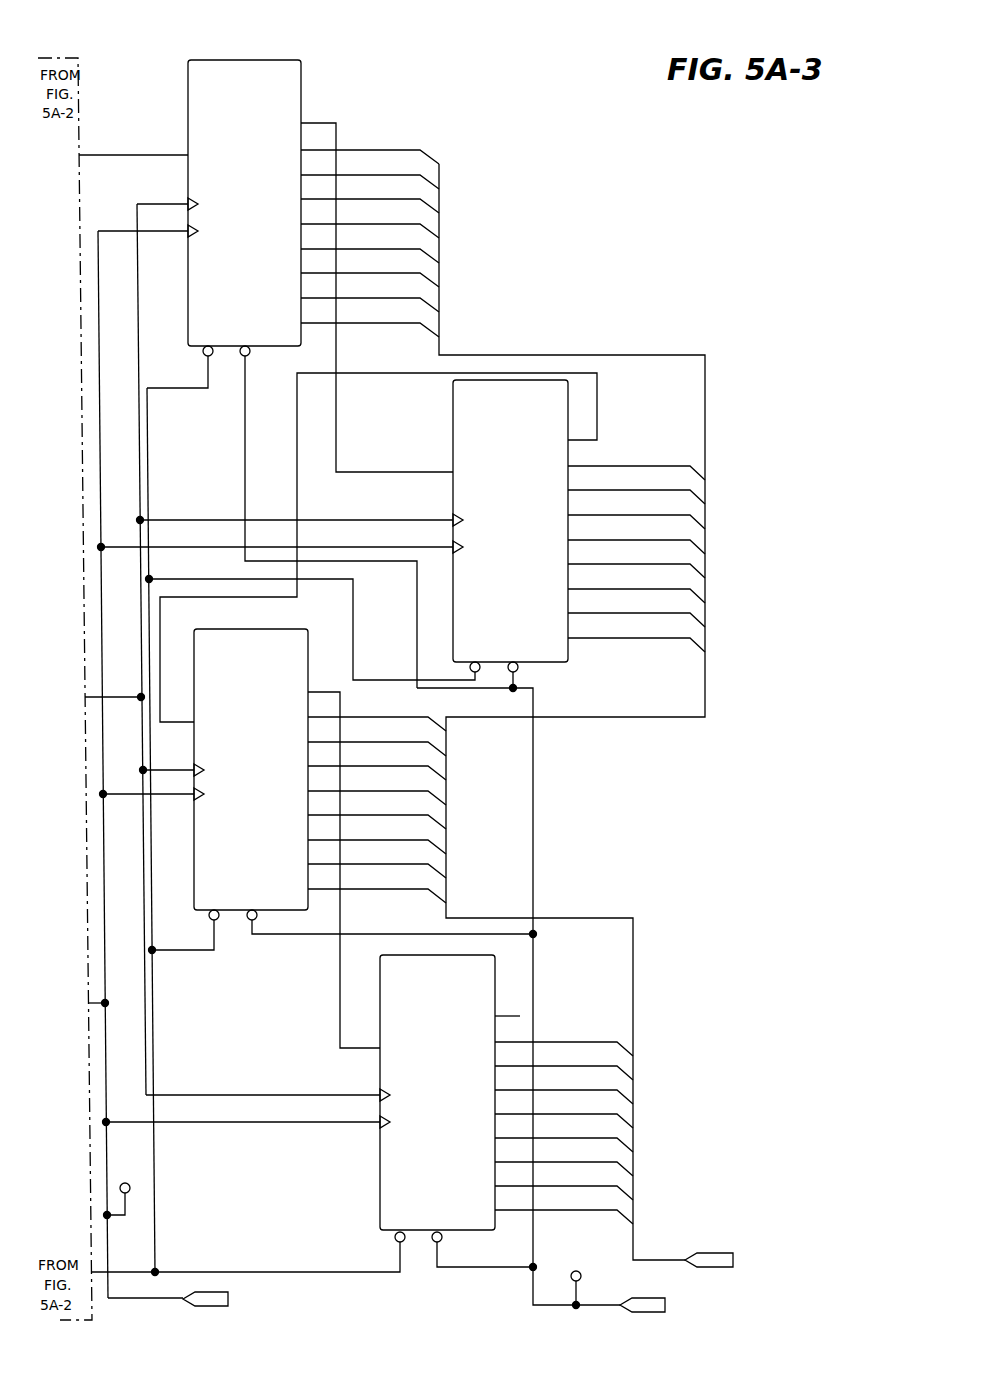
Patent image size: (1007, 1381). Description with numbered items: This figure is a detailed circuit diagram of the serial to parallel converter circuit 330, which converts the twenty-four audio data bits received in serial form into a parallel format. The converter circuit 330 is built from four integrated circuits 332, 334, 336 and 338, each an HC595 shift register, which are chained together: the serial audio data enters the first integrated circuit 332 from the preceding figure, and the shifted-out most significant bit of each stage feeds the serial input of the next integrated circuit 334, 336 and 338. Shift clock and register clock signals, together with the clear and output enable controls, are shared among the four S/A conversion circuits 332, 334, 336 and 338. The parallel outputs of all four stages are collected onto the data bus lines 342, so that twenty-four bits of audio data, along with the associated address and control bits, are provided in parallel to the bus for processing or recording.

The serial to parallel converter circuit 330 is at (222, 29).
The integrated circuit 332 is at (260, 60).
The integrated circuit 334 is at (453, 427).
The integrated circuit 336 is at (308, 638).
The integrated circuit 338 is at (380, 1195).
The data bus lines 342 is at (517, 682).